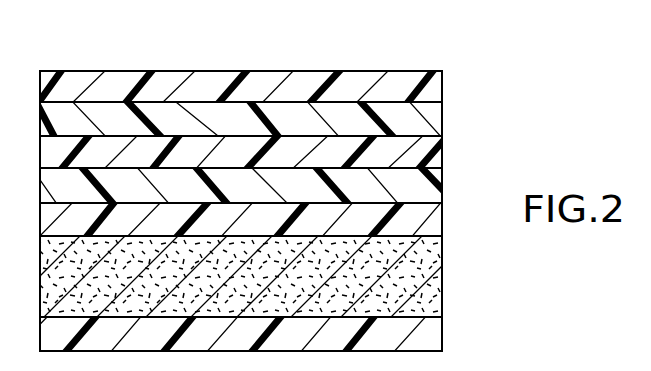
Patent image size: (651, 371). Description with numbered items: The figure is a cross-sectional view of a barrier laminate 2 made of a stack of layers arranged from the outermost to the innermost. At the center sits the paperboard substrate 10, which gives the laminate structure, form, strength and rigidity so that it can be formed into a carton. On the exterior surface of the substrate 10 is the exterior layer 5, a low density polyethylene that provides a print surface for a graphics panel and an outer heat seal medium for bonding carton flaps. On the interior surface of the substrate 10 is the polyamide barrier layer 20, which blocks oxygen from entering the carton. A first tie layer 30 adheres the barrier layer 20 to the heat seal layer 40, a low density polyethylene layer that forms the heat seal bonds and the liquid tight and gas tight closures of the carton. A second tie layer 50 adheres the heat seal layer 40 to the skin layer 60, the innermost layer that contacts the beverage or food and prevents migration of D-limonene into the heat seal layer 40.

The laminate structure 2 is at (63, 56).
The exterior layer 5 is at (442, 335).
The substrate 10 is at (442, 280).
The barrier layer 20 is at (442, 225).
The first tie layer 30 is at (442, 195).
The heat seal layer 40 is at (442, 158).
The second tie layer 50 is at (442, 125).
The skin layer 60 is at (442, 90).